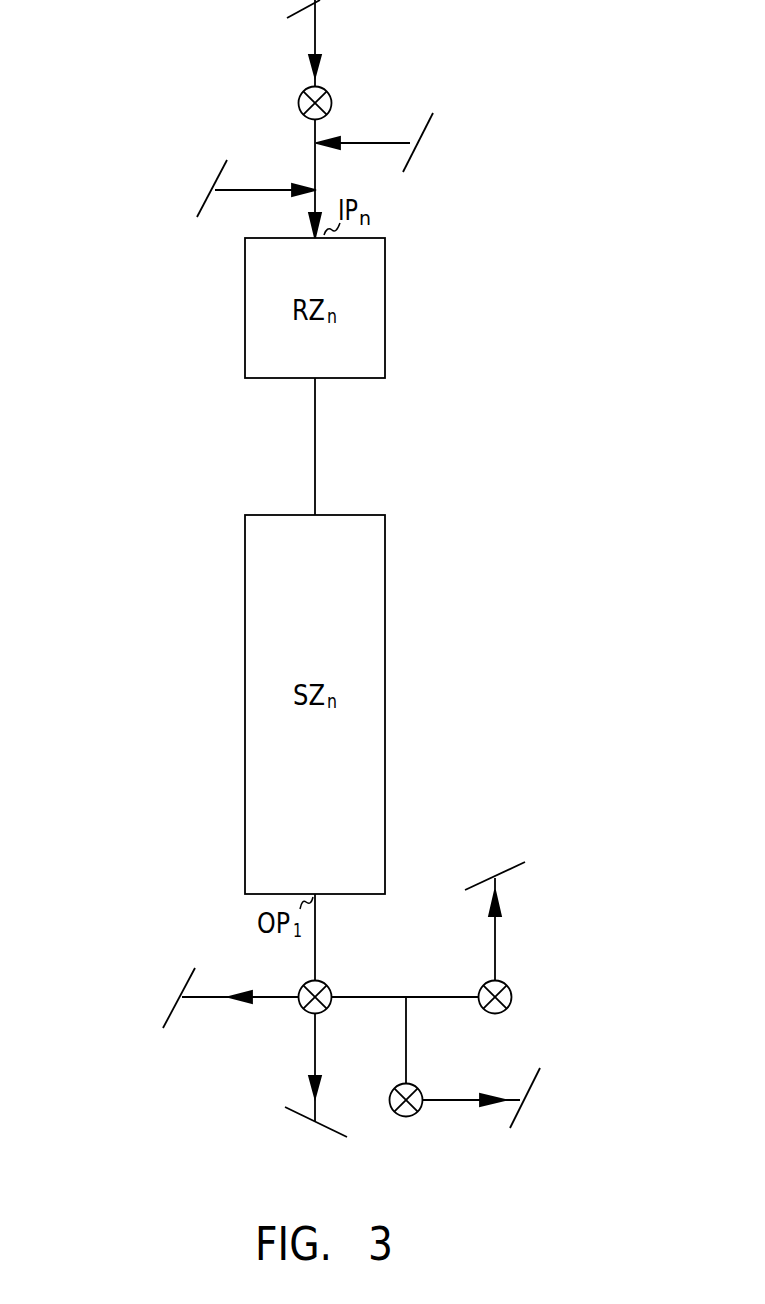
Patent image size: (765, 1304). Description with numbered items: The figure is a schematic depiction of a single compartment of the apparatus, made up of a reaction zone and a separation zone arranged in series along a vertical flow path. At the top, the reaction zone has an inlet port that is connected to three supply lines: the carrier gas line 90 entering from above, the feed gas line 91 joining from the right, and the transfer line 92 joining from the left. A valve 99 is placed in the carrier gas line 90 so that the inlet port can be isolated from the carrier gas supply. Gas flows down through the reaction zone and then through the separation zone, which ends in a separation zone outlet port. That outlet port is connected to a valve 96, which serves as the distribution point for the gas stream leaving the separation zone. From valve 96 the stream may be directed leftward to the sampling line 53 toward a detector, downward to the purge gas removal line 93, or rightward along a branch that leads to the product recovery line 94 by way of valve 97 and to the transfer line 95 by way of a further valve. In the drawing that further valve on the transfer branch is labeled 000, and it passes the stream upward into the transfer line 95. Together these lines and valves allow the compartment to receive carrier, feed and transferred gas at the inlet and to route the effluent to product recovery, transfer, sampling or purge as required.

The carrier gas line 90 is at (318, 22).
The valve 99 is at (302, 92).
The feed gas line 91 is at (382, 140).
The transfer line 92 is at (262, 187).
The valve 96 is at (329, 984).
The sampling line 53 is at (208, 999).
The purge gas removal line 93 is at (313, 1058).
The transfer line 95 is at (497, 938).
The transfer valve 000 is at (512, 997).
The product recovery line 94 is at (449, 1097).
The valve 97 is at (422, 1112).